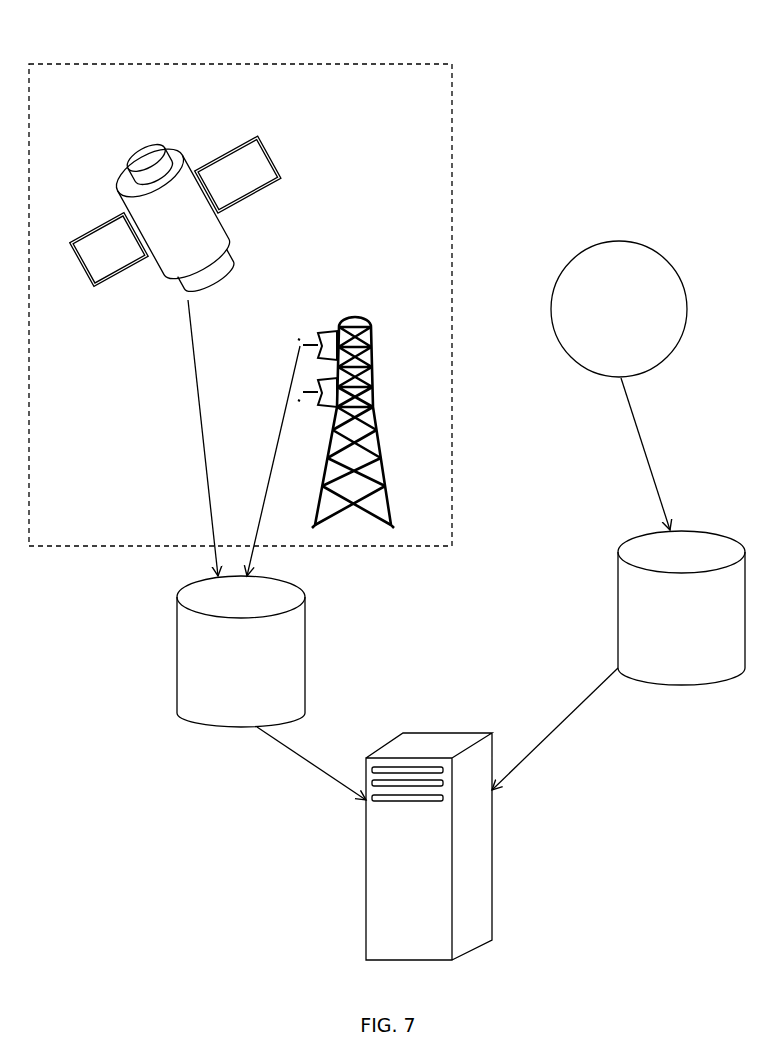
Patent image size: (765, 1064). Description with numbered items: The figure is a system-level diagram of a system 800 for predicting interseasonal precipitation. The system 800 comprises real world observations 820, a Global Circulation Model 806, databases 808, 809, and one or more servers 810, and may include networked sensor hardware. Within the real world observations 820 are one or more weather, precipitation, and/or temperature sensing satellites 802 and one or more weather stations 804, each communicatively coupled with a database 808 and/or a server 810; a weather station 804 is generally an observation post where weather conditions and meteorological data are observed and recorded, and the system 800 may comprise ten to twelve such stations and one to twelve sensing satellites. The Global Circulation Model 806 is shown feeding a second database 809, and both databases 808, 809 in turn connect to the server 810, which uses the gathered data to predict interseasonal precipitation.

The system 800 is at (66, 40).
The real world observations 820 is at (55, 93).
The satellite 802 is at (160, 226).
The weather station 804 is at (350, 295).
The Global Circulation Model (GCM) 806 is at (604, 314).
The database 808 is at (223, 681).
The database 809 is at (668, 630).
The server 810 is at (398, 890).